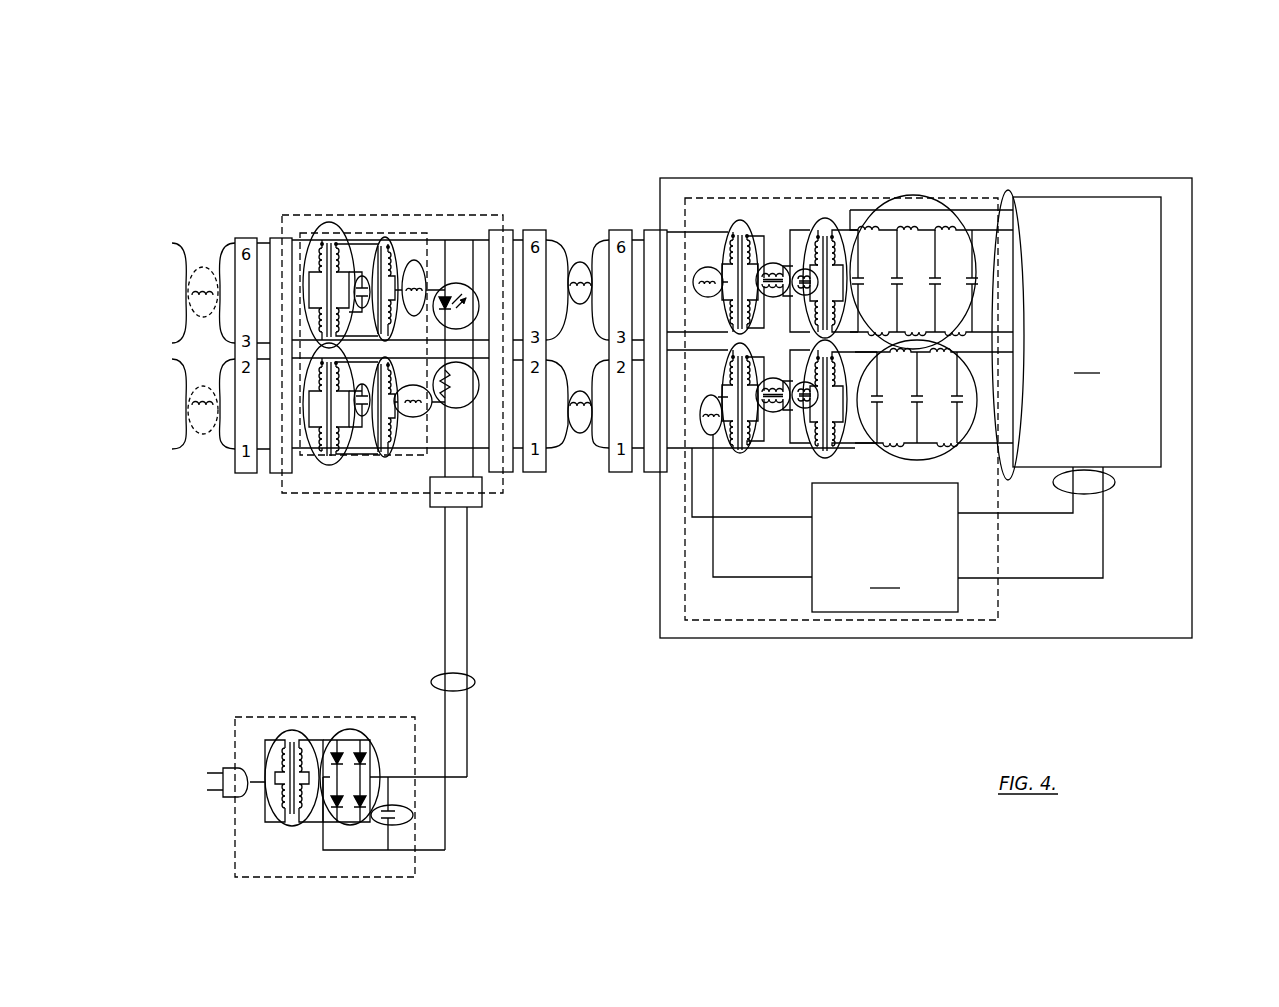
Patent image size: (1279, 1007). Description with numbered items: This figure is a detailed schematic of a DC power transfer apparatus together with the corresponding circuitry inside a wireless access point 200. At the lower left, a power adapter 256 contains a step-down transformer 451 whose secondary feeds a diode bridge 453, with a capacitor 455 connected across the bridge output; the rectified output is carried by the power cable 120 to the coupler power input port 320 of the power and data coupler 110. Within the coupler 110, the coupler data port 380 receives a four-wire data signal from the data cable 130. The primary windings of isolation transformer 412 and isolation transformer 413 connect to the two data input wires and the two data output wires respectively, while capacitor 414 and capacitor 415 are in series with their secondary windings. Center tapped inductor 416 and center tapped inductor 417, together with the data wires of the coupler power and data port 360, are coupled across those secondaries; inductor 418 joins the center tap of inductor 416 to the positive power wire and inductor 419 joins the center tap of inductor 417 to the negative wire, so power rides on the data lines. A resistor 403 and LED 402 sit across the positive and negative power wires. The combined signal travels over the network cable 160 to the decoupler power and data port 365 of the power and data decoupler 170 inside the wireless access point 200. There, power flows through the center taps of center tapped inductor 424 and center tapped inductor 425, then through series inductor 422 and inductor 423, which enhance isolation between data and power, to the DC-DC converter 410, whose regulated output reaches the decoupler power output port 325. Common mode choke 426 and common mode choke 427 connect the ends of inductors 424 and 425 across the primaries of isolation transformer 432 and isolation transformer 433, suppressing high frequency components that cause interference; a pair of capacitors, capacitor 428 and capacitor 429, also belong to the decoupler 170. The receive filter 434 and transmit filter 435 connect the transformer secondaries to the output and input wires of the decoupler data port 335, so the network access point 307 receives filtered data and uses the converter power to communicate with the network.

The power and data coupler 110 is at (365, 373).
The power cable 120 is at (478, 681).
The data cable 130 is at (207, 265).
The network cable 160 is at (580, 436).
The power and data decoupler 170 is at (854, 400).
The wireless access point 200 is at (1142, 176).
The power adapter 256 is at (312, 786).
The network access point 307 is at (1087, 332).
The coupler power input port 320 is at (486, 509).
The decoupler power output port 325 is at (1124, 481).
The decoupler data port 335 is at (1017, 192).
The coupler power and data port 360 is at (511, 228).
The decoupler power and data port 365 is at (652, 228).
The coupler data port 380 is at (275, 233).
The LED 402 is at (457, 282).
The resistor 403 is at (478, 366).
The DC-DC converter 410 is at (957, 539).
The isolation transformer 412 is at (312, 226).
The isolation transformer 413 is at (326, 468).
The capacitor 414 is at (361, 262).
The capacitor 415 is at (360, 429).
The center tapped inductor 416 is at (370, 240).
The center tapped inductor 417 is at (381, 458).
The inductor 418 is at (423, 263).
The inductor 419 is at (416, 419).
The inductor 422 is at (706, 266).
The inductor 423 is at (708, 440).
The center tapped inductor 424 is at (733, 218).
The center tapped inductor 425 is at (739, 460).
The common mode choke 426 is at (768, 253).
The common mode choke 427 is at (773, 427).
The capacitor 428 is at (797, 265).
The capacitor 429 is at (803, 410).
The isolation transformer 432 is at (815, 220).
The isolation transformer 433 is at (828, 460).
The receive filter 434 is at (879, 205).
The transmit filter 435 is at (935, 462).
The step-down transformer 451 is at (288, 828).
The diode bridge 453 is at (347, 829).
The capacitor 455 is at (410, 823).